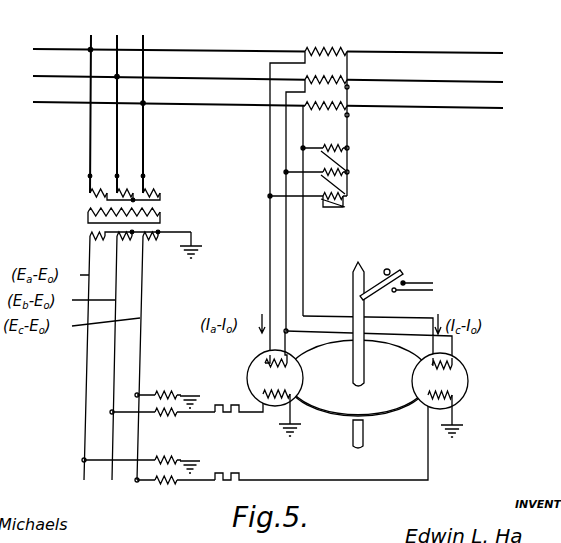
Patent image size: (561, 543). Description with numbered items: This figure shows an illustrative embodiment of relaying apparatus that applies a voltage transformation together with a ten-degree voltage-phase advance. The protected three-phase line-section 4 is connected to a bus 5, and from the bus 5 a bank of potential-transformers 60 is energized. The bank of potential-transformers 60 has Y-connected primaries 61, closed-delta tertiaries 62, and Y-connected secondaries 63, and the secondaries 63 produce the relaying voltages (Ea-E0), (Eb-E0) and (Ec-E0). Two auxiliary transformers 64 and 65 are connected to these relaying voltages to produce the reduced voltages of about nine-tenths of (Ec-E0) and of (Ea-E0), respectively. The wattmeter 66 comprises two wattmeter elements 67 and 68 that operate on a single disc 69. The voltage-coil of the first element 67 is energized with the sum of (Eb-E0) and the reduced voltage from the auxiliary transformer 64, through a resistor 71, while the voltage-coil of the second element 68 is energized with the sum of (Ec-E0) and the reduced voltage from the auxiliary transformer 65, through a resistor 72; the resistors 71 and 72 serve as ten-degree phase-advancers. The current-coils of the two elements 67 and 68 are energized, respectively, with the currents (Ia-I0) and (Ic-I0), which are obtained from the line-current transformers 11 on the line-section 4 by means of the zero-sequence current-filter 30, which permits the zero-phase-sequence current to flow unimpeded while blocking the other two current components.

The protected three-phase line-section 4 is at (185, 104).
The bus 5 is at (90, 155).
The line-current transformers 11 is at (346, 52).
The zero-sequence current-filter 30 is at (392, 183).
The bank of potential-transformers 60 is at (127, 217).
The Y-connected primaries 61 is at (90, 193).
The closed-delta tertiaries 62 is at (88, 212).
The Y-connected secondaries 63 is at (90, 236).
The auxiliary transformer 64 is at (160, 414).
The auxiliary transformer 65 is at (160, 482).
The wattmeter 66 is at (437, 273).
The wattmeter element 67 is at (303, 378).
The wattmeter element 68 is at (468, 380).
The disc 69 is at (405, 389).
The resistor 71 is at (230, 404).
The resistor 72 is at (237, 479).